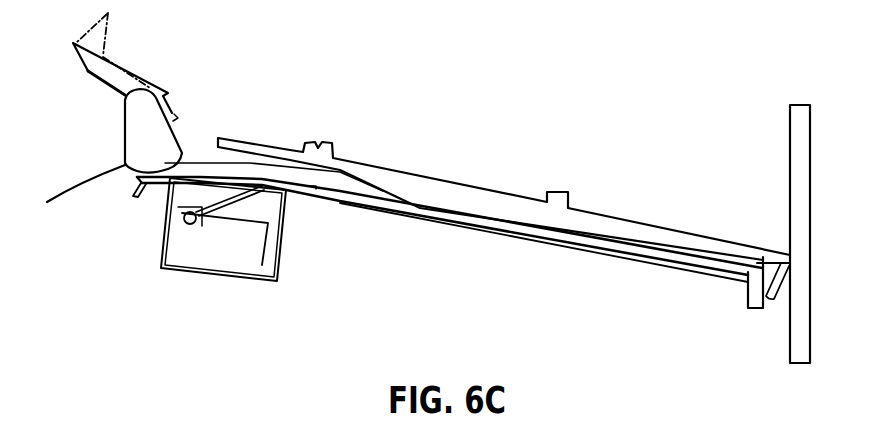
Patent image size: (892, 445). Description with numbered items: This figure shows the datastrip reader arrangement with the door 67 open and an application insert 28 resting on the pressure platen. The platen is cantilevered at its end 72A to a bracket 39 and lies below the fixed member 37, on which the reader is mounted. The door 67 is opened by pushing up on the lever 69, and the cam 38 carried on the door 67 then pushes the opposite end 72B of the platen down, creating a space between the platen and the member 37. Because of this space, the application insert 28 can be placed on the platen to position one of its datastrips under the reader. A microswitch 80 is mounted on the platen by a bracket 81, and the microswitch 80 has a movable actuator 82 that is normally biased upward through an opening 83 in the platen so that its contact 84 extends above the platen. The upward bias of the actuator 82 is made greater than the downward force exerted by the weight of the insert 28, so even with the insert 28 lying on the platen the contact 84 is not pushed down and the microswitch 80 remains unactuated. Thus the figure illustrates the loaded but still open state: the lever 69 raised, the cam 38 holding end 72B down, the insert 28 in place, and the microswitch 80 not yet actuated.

The application insert 28 is at (94, 175).
The fixed member 37 is at (446, 188).
The cam 38 is at (170, 143).
The bracket 39 is at (747, 298).
The door 67 is at (128, 79).
The lever 69 is at (110, 32).
The end of pressure platen 72A is at (773, 294).
The end of pressure platen 72B is at (135, 184).
The microswitch 80 is at (212, 243).
The bracket 81 is at (278, 266).
The movable actuator 82 is at (225, 196).
The opening 83 is at (307, 190).
The contact 84 is at (278, 180).